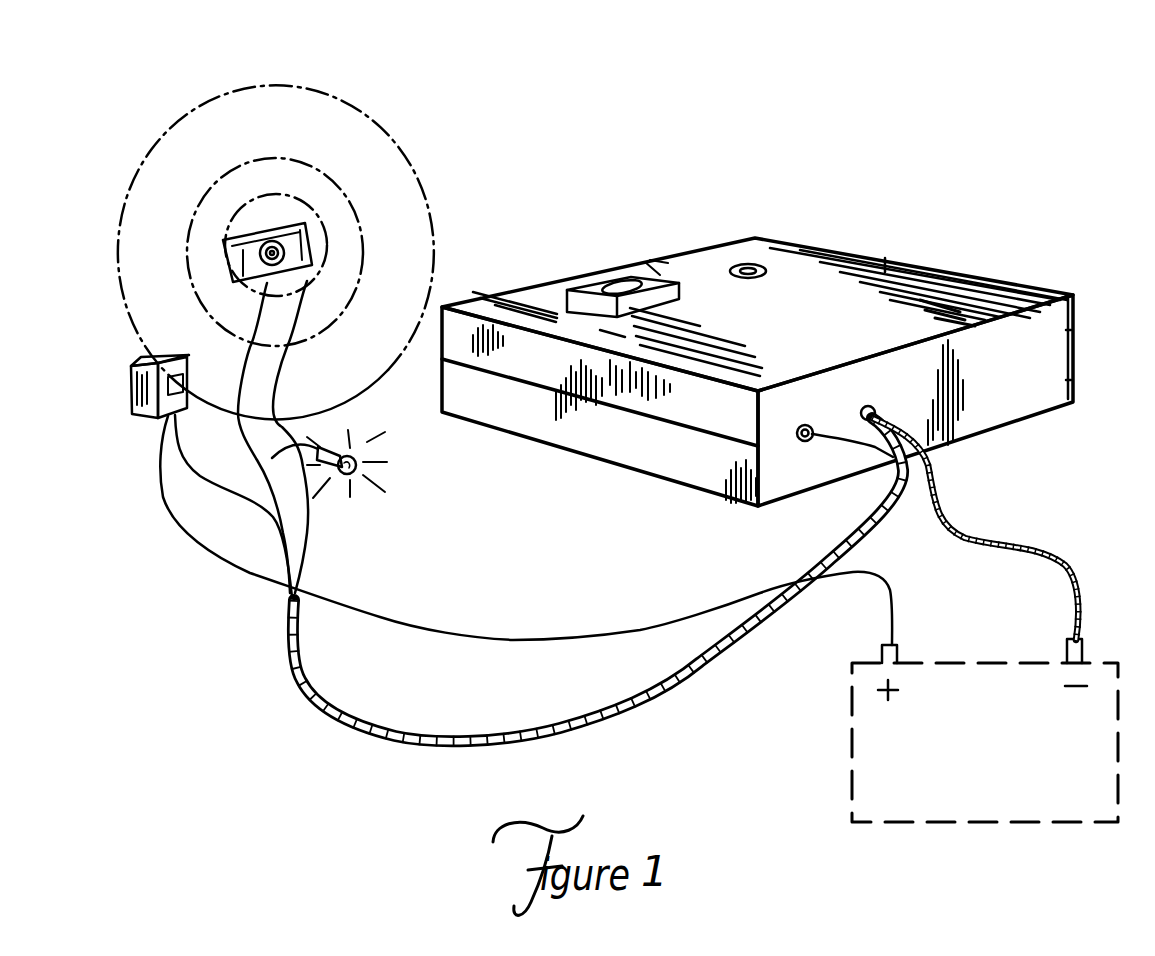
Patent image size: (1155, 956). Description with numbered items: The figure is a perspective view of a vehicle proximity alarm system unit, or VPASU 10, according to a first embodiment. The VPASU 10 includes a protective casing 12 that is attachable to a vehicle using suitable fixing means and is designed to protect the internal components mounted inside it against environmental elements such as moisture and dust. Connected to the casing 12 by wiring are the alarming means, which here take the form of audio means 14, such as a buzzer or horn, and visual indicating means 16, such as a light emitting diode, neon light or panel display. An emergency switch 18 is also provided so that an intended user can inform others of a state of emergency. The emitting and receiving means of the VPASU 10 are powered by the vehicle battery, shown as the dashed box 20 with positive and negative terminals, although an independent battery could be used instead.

The vehicle proximity alarm system unit (VPASU) 10 is at (912, 100).
The protective casing 12 is at (958, 250).
The audio means 14 is at (337, 243).
The visual indicating means 16 is at (400, 483).
The emergency switch 18 is at (123, 421).
The battery 20 is at (833, 787).